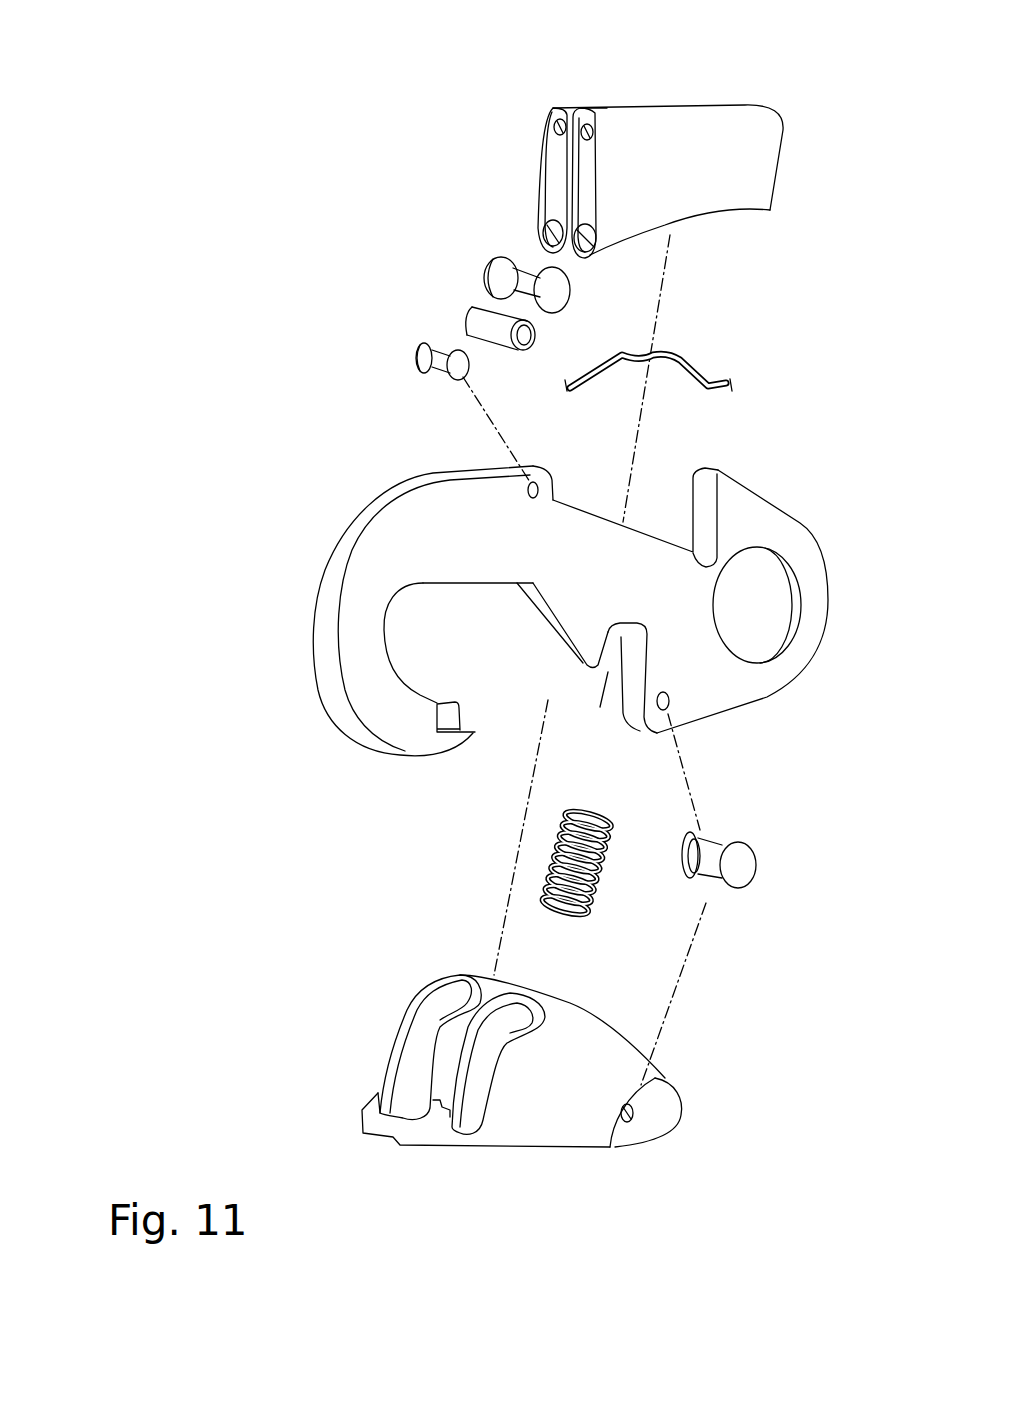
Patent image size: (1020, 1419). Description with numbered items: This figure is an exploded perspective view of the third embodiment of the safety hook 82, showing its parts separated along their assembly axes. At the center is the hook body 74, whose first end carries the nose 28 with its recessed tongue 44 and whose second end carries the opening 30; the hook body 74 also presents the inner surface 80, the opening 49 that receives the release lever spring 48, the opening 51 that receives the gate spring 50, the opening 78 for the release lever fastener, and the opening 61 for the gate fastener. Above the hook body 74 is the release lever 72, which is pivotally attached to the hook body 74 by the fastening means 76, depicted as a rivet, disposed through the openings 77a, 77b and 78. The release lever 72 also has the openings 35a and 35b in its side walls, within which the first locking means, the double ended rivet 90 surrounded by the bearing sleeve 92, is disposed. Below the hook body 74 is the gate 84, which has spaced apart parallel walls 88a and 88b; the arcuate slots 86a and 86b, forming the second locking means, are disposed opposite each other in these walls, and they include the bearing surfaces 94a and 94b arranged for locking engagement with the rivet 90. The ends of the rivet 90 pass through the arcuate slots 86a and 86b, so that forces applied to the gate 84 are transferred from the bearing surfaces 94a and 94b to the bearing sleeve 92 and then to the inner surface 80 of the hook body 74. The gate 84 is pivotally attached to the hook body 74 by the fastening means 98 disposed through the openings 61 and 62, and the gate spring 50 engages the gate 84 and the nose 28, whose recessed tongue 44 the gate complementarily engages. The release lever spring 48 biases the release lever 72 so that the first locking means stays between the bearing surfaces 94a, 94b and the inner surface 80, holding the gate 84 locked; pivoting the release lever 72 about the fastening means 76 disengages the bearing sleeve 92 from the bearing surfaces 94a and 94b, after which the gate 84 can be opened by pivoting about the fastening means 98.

The release lever 72 is at (672, 98).
The opening 77a is at (565, 122).
The opening 77b is at (593, 132).
The opening 35a is at (557, 230).
The opening 35b is at (585, 240).
The double ended rivet 90 is at (500, 265).
The bearing sleeve 92 is at (477, 317).
The fastening means 76 is at (427, 357).
The release lever spring 48 is at (697, 360).
The opening 49 is at (665, 483).
The opening 78 is at (528, 488).
The opening 51 is at (620, 613).
The inner surface 80 is at (540, 600).
The opening 30 is at (753, 620).
The hook body 74 is at (742, 718).
The opening 61 is at (668, 702).
The recessed tongue 44 is at (447, 718).
The nose 28 is at (447, 763).
The safety hook 82 is at (178, 823).
The gate spring 50 is at (603, 865).
The fastening means 98 is at (730, 863).
The gate spaced apart parallel wall 88a is at (440, 1050).
The bearing surface 94a is at (465, 1005).
The bearing surface 94b is at (523, 1023).
The arcuate slot 86a is at (403, 1093).
The arcuate slot 86b is at (468, 1113).
The gate 84 is at (524, 1150).
The gate spaced apart parallel wall 88b is at (580, 1120).
The opening 62 is at (633, 1117).